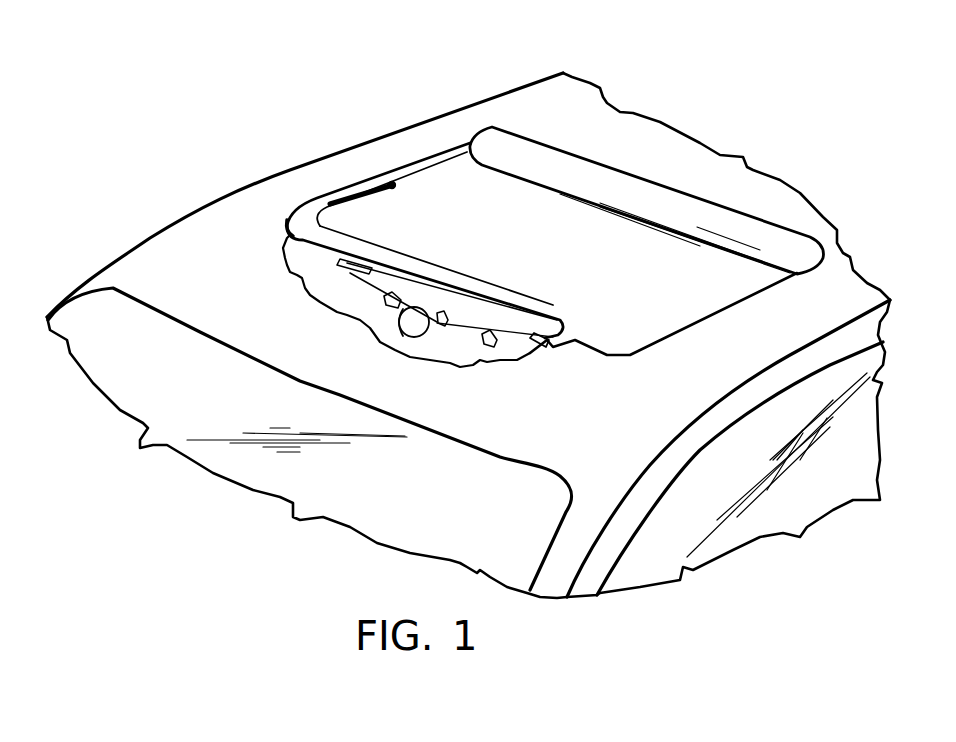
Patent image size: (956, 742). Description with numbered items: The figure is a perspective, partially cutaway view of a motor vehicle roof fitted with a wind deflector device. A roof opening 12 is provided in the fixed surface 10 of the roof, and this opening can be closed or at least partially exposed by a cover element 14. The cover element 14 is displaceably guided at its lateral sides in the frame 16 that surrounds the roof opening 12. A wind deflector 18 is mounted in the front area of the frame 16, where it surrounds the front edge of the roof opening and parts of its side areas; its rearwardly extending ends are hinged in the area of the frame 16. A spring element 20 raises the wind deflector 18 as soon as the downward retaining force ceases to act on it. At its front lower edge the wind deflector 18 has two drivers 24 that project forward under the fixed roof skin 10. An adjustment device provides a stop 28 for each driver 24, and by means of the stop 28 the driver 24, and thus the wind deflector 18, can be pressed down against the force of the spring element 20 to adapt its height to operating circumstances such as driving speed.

The fixed surface 10 is at (664, 158).
The roof opening 12 is at (582, 267).
The cover element 14 is at (525, 153).
The frame 16 is at (423, 165).
The wind deflector 18 is at (288, 216).
The spring element 20 is at (350, 195).
The driver 24 is at (553, 343).
The stop 28 is at (513, 340).